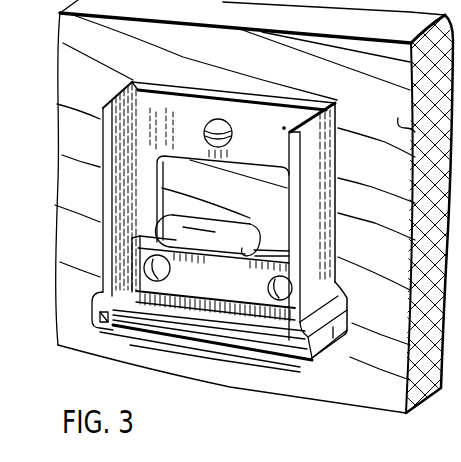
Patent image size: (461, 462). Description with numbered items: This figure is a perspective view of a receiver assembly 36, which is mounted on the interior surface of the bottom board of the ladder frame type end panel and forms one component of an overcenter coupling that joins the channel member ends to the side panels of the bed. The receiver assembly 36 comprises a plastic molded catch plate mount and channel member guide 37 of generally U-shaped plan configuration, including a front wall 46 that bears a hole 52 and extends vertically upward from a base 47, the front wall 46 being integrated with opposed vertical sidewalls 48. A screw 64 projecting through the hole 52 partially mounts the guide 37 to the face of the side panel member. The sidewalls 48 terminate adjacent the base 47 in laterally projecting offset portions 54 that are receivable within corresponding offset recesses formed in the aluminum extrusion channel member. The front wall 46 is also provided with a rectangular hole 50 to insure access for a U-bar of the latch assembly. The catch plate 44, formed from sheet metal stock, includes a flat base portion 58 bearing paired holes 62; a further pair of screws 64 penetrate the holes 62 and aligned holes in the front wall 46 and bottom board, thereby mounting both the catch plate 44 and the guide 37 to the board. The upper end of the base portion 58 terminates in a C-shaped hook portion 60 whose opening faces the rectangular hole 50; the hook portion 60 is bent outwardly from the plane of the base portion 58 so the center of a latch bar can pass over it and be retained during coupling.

The receiver assembly 36 is at (354, 278).
The catch plate mount and channel member guide 37 is at (338, 178).
The catch plate 44 is at (263, 244).
The front wall 46 is at (172, 110).
The base 47 is at (257, 359).
The sidewalls 48 is at (127, 192).
The rectangular hole 50 is at (250, 190).
The hole 52 is at (238, 140).
The offset portions 54 is at (93, 313).
The base portion 58 is at (346, 291).
The hook portion 60 is at (218, 222).
The holes 62 is at (168, 272).
The screw 64 is at (226, 122).